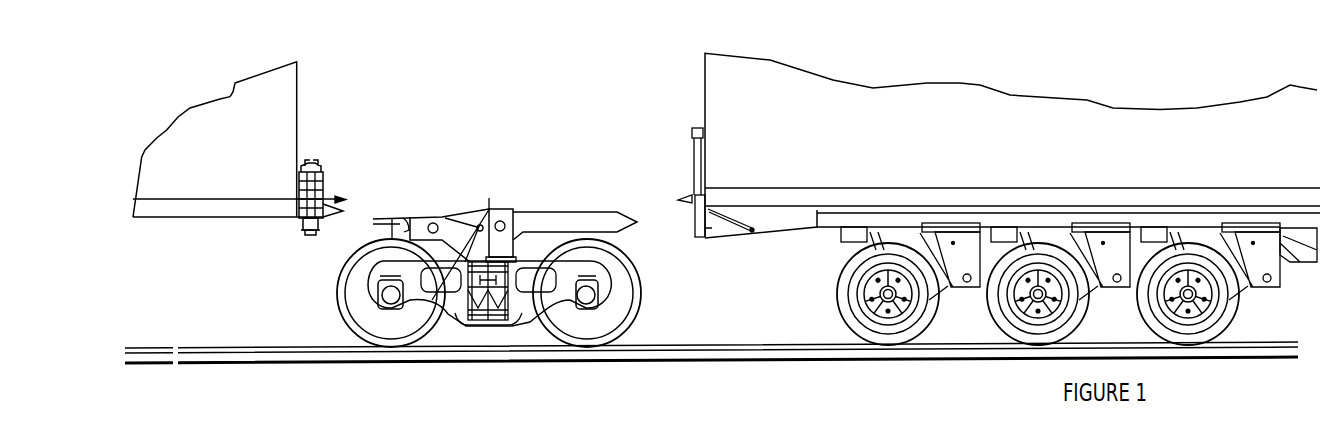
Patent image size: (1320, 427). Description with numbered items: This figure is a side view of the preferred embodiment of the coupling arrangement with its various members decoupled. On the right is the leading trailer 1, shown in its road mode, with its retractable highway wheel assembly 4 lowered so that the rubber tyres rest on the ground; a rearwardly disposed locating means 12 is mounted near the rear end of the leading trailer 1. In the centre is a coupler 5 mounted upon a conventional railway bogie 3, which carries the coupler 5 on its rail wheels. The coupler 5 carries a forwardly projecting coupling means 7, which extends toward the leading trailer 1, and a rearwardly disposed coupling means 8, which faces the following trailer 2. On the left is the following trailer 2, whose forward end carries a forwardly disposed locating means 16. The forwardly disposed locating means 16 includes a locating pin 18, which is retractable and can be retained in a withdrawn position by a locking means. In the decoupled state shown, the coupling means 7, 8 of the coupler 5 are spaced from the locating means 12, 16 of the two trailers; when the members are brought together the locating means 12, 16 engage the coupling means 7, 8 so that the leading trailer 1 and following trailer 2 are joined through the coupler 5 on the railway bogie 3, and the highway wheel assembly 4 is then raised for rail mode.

The leading trailer 1 is at (961, 81).
The following trailer 2 is at (190, 108).
The railway bogie 3 is at (400, 327).
The retractable highway wheel assembly 4 is at (918, 327).
The coupler 5 is at (515, 181).
The forwardly projecting coupling means 7 is at (582, 223).
The rearwardly disposed coupling means 8 is at (418, 217).
The rearwardly disposed locating means 12 is at (763, 223).
The forwardly disposed locating means 16 is at (318, 158).
The locating pin 18 is at (301, 234).